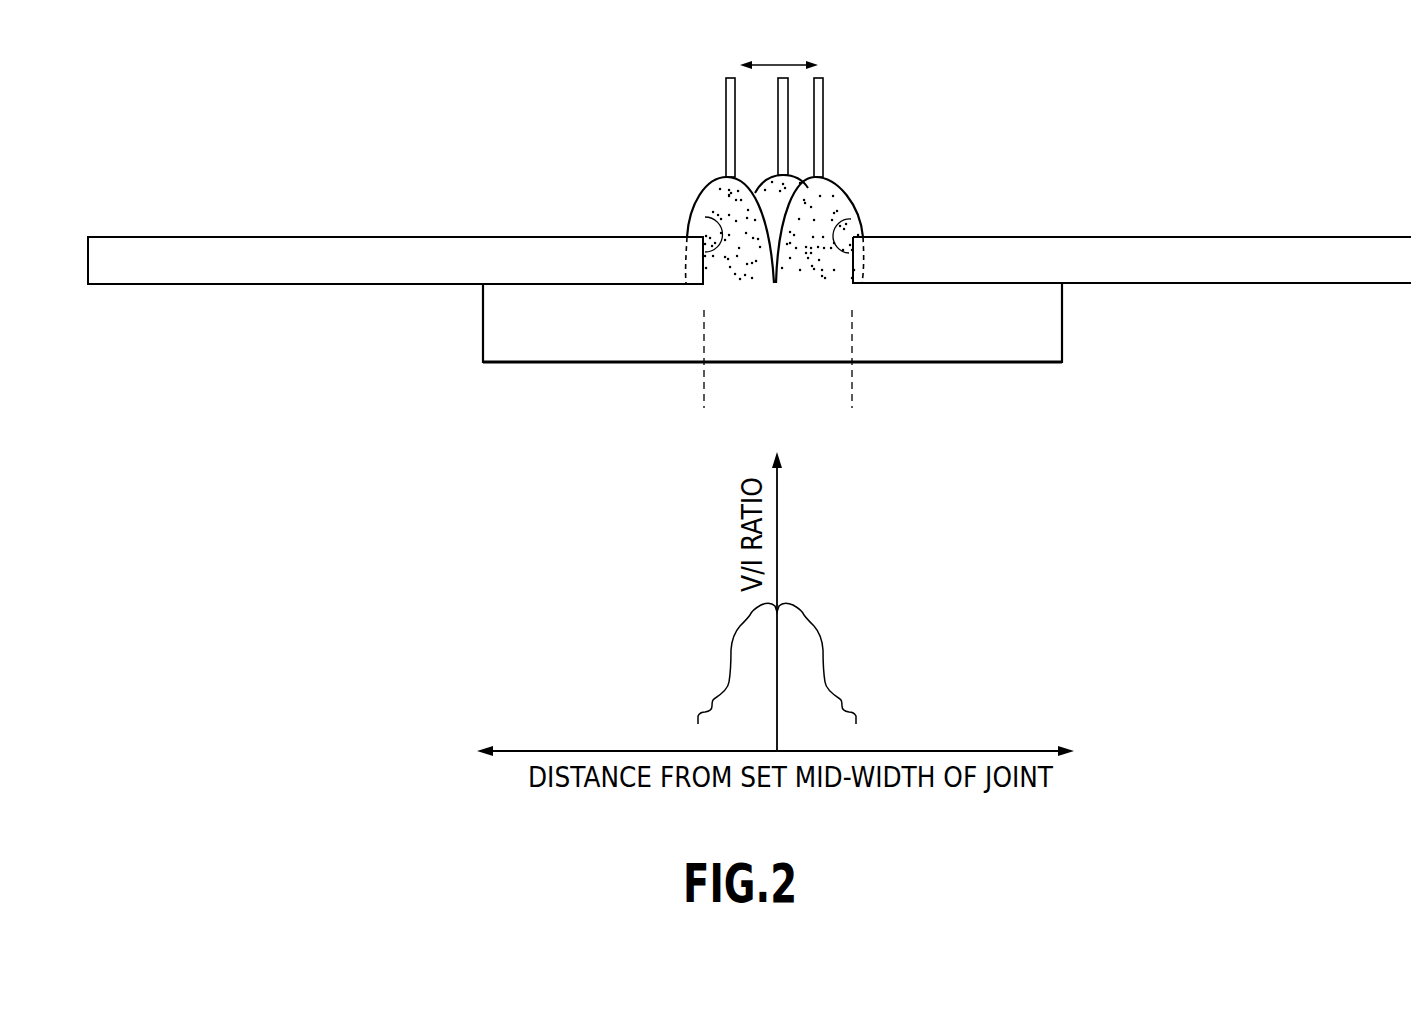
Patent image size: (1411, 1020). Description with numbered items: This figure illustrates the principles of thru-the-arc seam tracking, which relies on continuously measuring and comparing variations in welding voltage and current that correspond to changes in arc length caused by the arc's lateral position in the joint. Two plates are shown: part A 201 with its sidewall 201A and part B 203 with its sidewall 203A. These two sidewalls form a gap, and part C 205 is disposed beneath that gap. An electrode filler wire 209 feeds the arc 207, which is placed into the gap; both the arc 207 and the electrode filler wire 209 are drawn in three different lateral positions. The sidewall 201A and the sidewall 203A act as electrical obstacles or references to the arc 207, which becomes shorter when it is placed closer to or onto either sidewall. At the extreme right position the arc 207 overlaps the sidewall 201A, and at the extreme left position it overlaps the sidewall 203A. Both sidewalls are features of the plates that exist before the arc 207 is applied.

The part A 201 is at (1147, 270).
The sidewall of part A 201A is at (851, 219).
The part B 203 is at (312, 272).
The sidewall of part B 203A is at (705, 217).
The part C 205 is at (967, 347).
The arc 207 is at (837, 178).
The electrode filler wire 209 is at (823, 93).